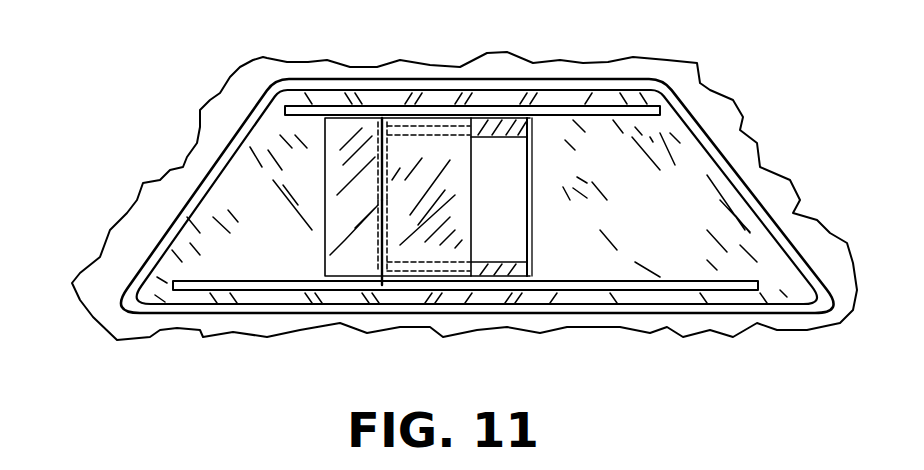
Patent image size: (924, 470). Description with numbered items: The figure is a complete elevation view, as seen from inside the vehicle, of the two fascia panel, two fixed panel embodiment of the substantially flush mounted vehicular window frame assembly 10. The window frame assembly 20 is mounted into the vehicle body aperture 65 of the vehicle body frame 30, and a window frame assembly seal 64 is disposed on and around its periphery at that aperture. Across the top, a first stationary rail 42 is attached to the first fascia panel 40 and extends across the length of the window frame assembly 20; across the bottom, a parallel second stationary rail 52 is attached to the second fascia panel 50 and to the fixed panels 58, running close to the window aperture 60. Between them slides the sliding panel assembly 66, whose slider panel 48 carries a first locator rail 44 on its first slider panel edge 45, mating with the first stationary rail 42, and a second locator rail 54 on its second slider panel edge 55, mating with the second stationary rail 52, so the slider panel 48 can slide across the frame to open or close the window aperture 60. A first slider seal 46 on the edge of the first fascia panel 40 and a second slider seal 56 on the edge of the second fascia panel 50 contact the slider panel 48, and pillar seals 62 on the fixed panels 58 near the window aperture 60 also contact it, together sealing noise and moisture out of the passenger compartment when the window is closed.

The substantially flush mounted vehicular window frame assembly 10 is at (252, 48).
The window frame assembly 20 is at (758, 313).
The vehicle body frame 30 is at (828, 245).
The first fascia panel 40 is at (448, 100).
The first stationary rail 42 is at (607, 106).
The first locator rail 44 is at (383, 118).
The first slider panel edge 45 is at (327, 115).
The first slider seal 46 is at (500, 133).
The slider panel 48 is at (340, 180).
The second fascia panel 50 is at (440, 299).
The second stationary rail 52 is at (222, 288).
The second locator rail 54 is at (383, 286).
The second slider panel edge 55 is at (325, 276).
The second slider seal 56 is at (497, 268).
The fixed panel 58 is at (243, 222).
The window aperture 60 is at (505, 222).
The pillar seal 62 is at (377, 262).
The window frame assembly seal 64 is at (152, 335).
The vehicle body aperture 65 is at (695, 143).
The sliding panel assembly 66 is at (334, 268).